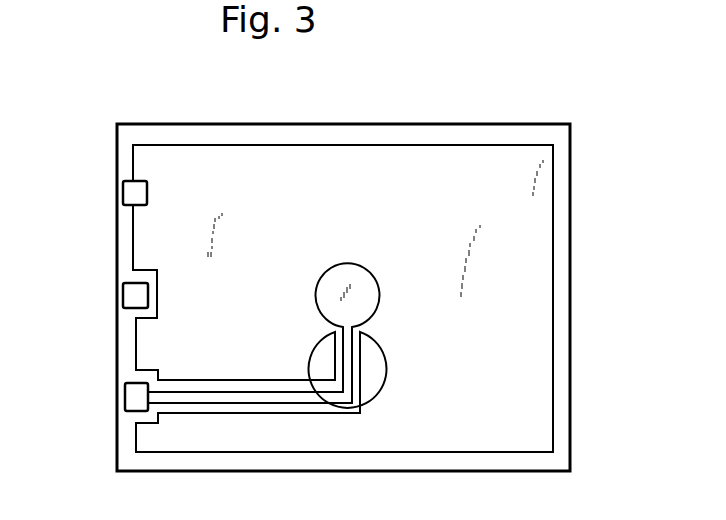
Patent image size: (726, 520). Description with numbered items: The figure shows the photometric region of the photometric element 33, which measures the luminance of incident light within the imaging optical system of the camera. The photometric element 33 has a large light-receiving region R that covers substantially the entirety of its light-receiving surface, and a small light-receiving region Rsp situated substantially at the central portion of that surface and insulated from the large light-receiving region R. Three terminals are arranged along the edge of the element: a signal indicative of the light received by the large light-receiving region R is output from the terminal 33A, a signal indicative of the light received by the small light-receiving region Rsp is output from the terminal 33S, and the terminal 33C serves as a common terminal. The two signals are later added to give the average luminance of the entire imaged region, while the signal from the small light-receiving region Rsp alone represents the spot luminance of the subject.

The photometric element 33 is at (603, 146).
The terminal 33A is at (135, 192).
The common terminal 33C is at (135, 296).
The terminal 33S is at (135, 398).
The large light-receiving region R is at (542, 227).
The small light-receiving region Rsp is at (330, 311).